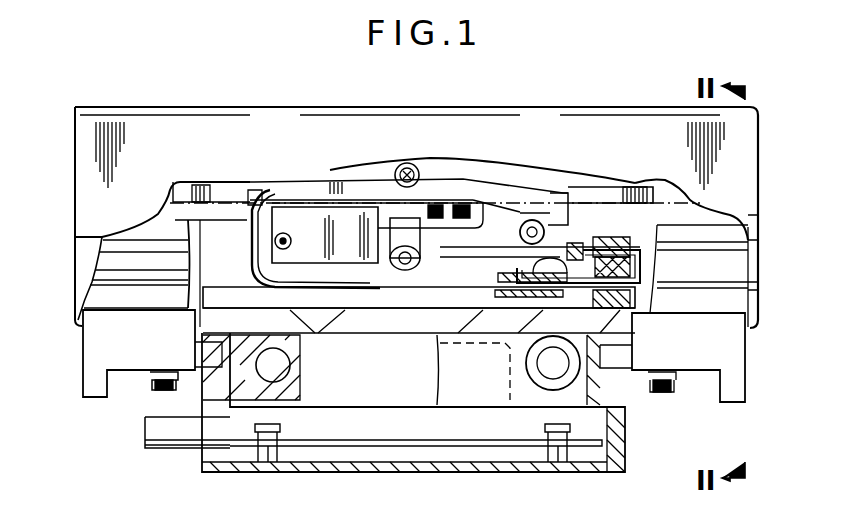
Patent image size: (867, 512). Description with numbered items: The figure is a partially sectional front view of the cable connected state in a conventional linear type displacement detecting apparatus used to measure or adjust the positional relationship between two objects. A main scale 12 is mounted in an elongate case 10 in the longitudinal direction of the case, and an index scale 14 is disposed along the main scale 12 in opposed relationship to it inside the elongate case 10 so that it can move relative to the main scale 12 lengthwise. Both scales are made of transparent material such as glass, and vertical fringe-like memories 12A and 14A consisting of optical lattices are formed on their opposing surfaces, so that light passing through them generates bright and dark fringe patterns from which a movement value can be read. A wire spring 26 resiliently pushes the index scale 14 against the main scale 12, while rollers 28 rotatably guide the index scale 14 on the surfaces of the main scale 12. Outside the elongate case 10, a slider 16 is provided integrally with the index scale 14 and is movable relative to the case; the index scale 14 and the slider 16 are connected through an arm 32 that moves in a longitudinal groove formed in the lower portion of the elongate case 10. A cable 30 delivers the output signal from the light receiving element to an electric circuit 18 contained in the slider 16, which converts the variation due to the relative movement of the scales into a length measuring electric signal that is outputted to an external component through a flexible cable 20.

The elongate case 10 is at (526, 120).
The main scale 12 is at (590, 185).
The memory 12A is at (638, 186).
The index scale 14 is at (474, 205).
The memory 14A is at (430, 205).
The slider 16 is at (612, 466).
The electric circuit 18 is at (460, 465).
The flexible cable 20 is at (170, 448).
The wire spring 26 is at (636, 290).
The rollers 28 is at (529, 212).
The cable 30 is at (262, 190).
The arm 32 is at (344, 312).